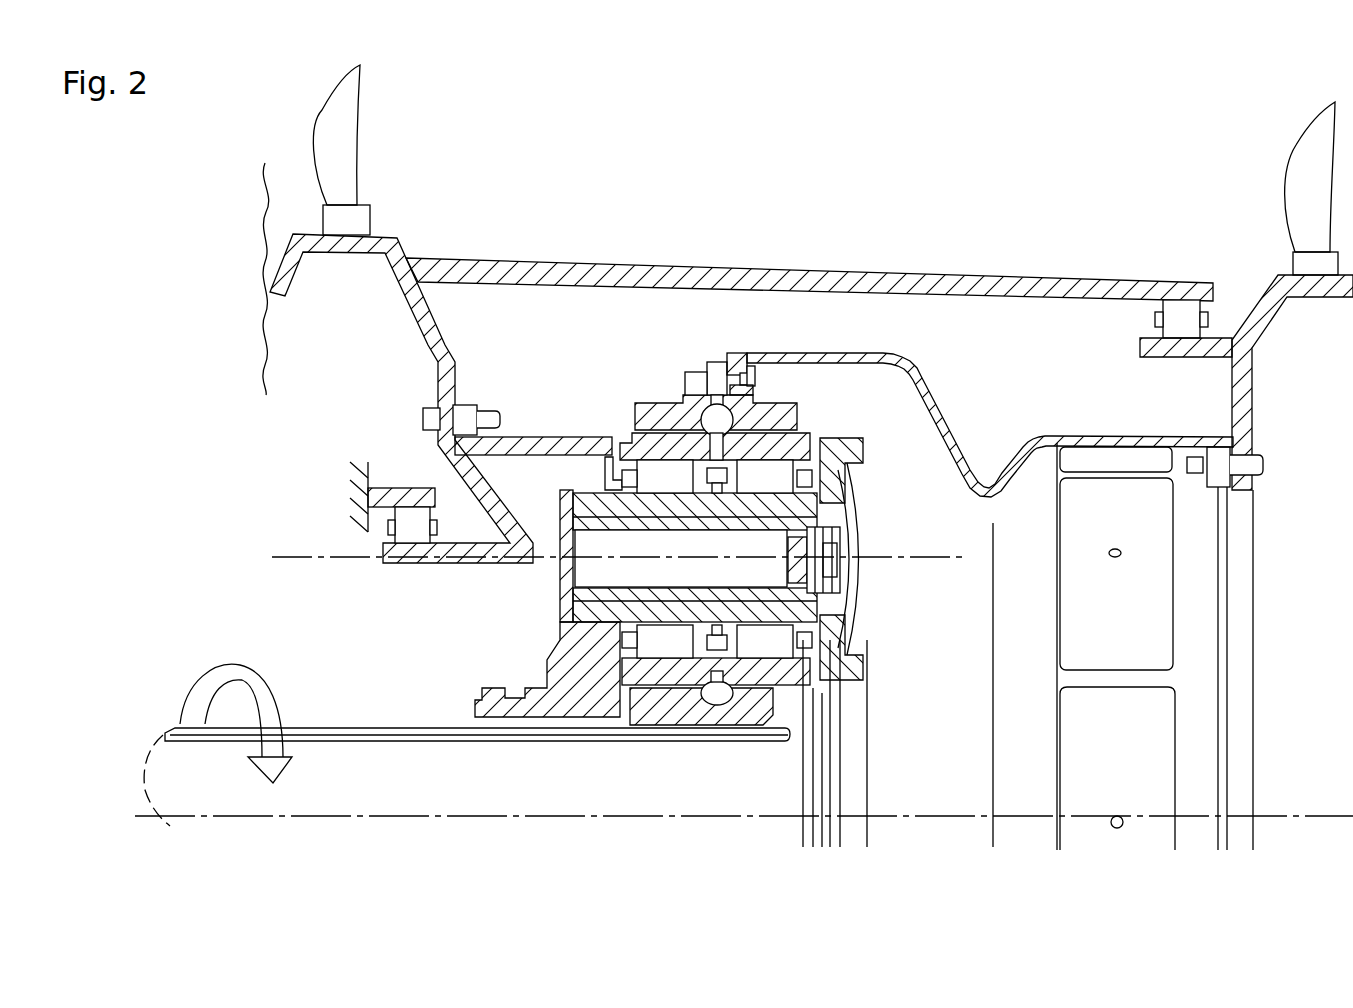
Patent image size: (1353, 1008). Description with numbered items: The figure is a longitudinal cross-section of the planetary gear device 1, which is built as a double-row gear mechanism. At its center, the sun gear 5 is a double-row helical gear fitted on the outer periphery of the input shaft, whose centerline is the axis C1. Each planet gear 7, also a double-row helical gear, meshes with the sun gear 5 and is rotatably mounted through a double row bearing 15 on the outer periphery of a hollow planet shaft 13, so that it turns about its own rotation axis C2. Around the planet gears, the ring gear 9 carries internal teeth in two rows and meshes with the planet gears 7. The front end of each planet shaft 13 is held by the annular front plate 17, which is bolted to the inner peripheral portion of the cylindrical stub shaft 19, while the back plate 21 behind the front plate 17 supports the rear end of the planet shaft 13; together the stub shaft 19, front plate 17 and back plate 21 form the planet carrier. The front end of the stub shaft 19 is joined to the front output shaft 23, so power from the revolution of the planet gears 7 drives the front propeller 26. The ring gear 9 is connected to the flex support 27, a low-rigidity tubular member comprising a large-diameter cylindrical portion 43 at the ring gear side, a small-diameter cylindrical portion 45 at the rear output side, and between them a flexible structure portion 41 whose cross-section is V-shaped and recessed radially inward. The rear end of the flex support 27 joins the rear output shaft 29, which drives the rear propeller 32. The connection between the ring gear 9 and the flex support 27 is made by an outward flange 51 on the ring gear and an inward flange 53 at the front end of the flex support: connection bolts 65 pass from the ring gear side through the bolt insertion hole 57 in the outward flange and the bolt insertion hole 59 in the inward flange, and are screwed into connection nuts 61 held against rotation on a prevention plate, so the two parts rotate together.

The planetary gear device 1 is at (245, 148).
The sun gear 5 is at (790, 722).
The planet gear 7 is at (627, 437).
The ring gear 9 is at (637, 410).
The planet shaft 13 is at (566, 521).
The double row bearing 15 is at (800, 482).
The front plate 17 is at (604, 476).
The stub shaft 19 is at (540, 436).
The back plate 21 is at (832, 439).
The front output shaft 23 is at (425, 344).
The propeller 26 is at (343, 157).
The flex support 27 is at (793, 356).
The rear output shaft 29 is at (1254, 400).
The propeller 32 is at (1300, 188).
The flexible structure portion 41 is at (962, 478).
The large-diameter cylindrical portion 43 is at (828, 354).
The small-diameter cylindrical portion 45 is at (1123, 441).
The outward flange 51 is at (711, 362).
The inward flange 53 is at (745, 391).
The bolt insertion hole 57 is at (728, 365).
The bolt insertion hole 59 is at (744, 371).
The connection nut 61 is at (752, 370).
The connection bolt 65 is at (686, 384).
The axis C1 is at (680, 818).
The rotation axis C2 is at (283, 555).